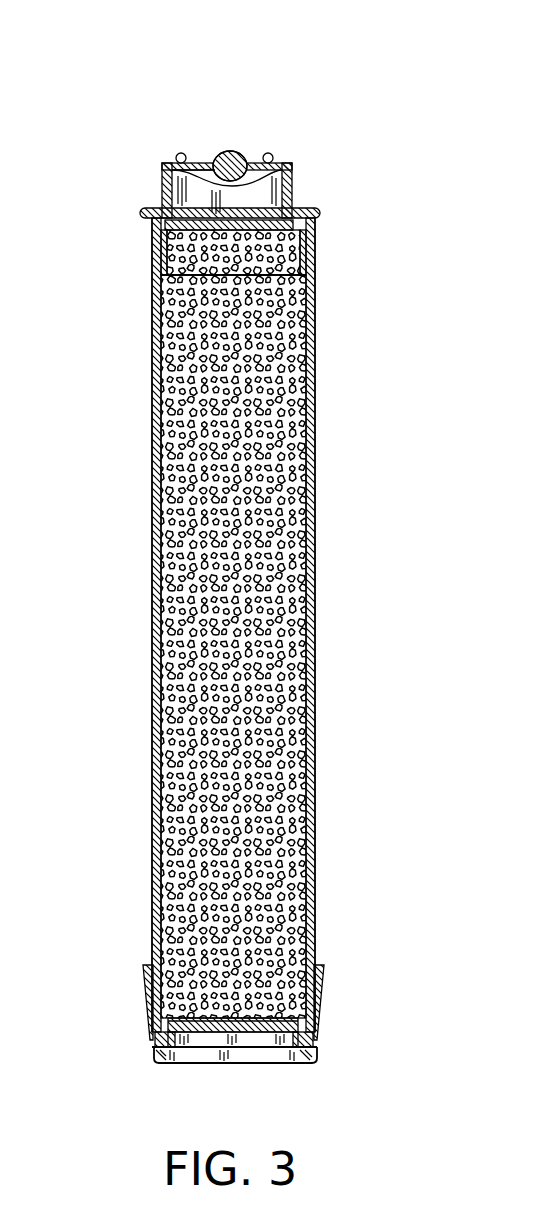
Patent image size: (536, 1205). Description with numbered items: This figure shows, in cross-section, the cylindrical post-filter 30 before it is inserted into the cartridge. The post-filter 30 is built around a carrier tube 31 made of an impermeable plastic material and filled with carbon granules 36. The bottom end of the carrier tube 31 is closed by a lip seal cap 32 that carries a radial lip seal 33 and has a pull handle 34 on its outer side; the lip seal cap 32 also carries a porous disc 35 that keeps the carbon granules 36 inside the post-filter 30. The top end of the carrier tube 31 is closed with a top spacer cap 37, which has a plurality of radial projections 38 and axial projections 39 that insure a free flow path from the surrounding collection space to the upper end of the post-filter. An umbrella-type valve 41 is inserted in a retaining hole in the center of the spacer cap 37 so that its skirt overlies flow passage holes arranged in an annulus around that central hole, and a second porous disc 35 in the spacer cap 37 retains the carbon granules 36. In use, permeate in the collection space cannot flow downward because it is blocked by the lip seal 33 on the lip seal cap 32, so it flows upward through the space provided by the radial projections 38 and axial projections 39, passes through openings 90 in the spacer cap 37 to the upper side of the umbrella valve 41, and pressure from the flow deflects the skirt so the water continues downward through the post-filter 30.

The post-filter 30 is at (322, 481).
The carrier tube 31 is at (313, 586).
The lip seal cap 32 is at (319, 1041).
The radial lip seal 33 is at (325, 976).
The pull handle 34 is at (306, 1058).
The porous disc 35 is at (213, 219).
The carbon granules 36 is at (289, 364).
The top spacer cap 37 is at (292, 177).
The radial projections 38 is at (137, 213).
The axial projections 39 is at (272, 155).
The umbrella-type valve 41 is at (236, 152).
The openings 90 is at (207, 162).